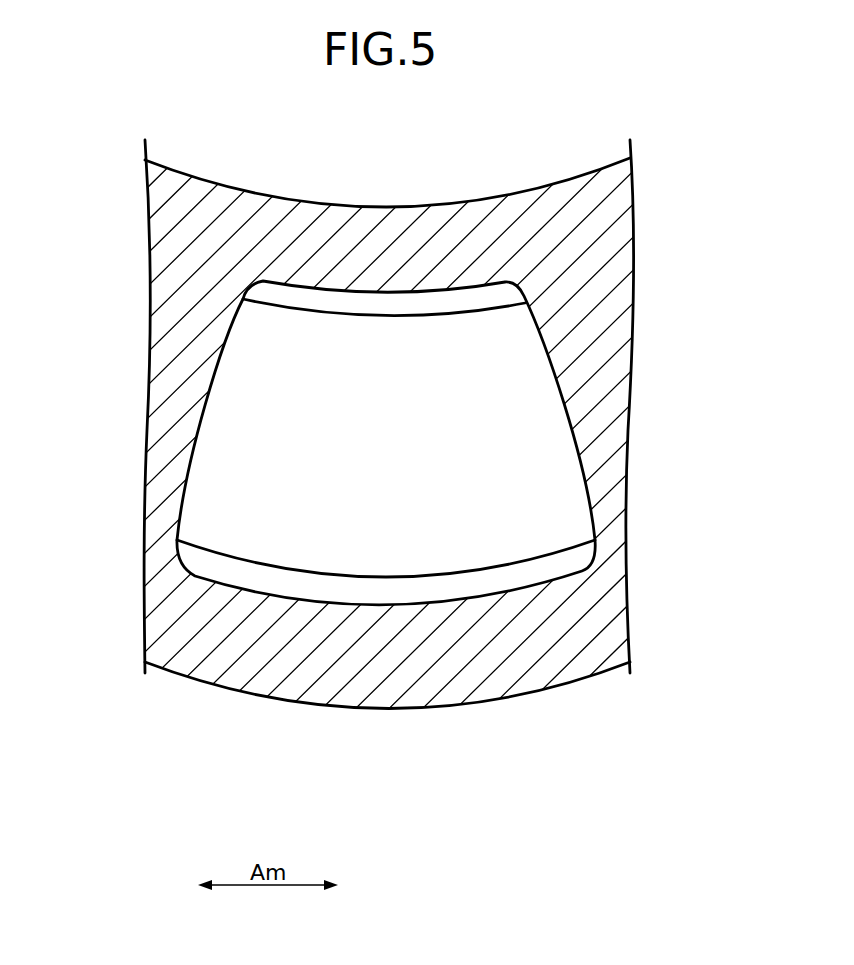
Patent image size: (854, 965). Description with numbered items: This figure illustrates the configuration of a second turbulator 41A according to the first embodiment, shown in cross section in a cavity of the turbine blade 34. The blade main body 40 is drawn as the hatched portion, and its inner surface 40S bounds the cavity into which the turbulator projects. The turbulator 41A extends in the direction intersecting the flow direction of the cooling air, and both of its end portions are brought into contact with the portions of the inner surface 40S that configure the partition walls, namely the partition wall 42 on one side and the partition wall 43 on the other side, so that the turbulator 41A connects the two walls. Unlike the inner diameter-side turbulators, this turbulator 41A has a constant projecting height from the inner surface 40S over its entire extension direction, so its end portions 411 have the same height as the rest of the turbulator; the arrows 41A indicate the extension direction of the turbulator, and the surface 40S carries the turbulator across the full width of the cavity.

The turbine blade 34 is at (476, 816).
The blade main body 40 is at (544, 644).
The inner surface 40S is at (233, 586).
The second turbulator 41A is at (282, 357).
The first portion 411 is at (393, 302).
The partition wall 42 is at (172, 421).
The partition wall 43 is at (600, 421).